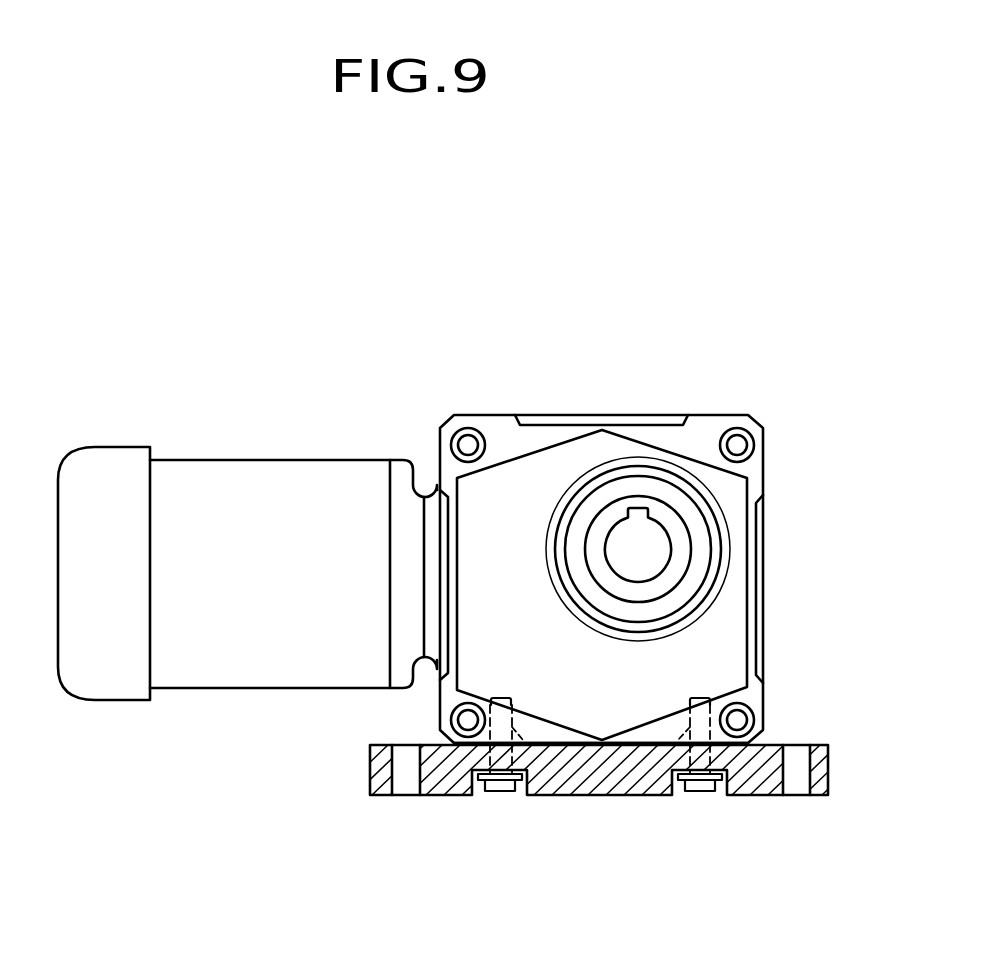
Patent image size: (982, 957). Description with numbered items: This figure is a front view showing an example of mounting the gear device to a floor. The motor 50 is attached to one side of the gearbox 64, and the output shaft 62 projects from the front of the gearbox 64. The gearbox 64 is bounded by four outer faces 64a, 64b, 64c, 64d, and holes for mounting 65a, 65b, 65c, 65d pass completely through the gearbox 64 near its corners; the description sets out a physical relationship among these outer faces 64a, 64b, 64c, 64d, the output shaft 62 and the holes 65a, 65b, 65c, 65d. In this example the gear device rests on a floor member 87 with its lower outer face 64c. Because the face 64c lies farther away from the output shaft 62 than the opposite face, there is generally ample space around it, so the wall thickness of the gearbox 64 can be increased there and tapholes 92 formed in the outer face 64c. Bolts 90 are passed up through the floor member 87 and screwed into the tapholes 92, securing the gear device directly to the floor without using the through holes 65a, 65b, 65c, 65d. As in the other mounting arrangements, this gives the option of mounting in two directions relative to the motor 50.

The motor 50 is at (230, 470).
The output shaft 62 is at (677, 527).
The gearbox 64 is at (665, 378).
The outer face 64a is at (606, 415).
The outer face 64b is at (767, 617).
The outer face 64c is at (614, 745).
The outer face 64d is at (438, 438).
The hole for mounting 65a is at (742, 428).
The hole for mounting 65b is at (750, 720).
The hole for mounting 65c is at (457, 737).
The hole for mounting 65d is at (467, 428).
The mounting base plate 87 is at (548, 795).
The bolt 90 is at (490, 795).
The taphole 92 is at (527, 797).